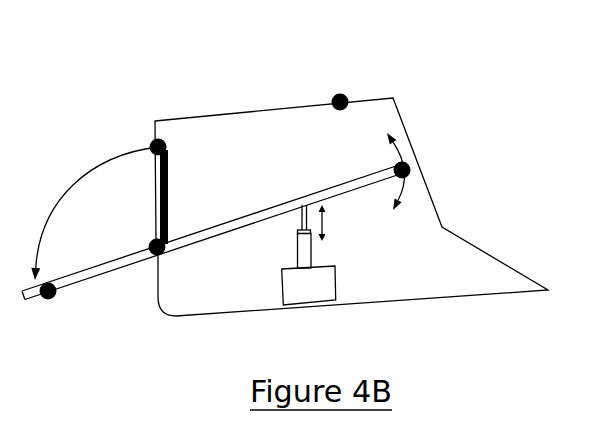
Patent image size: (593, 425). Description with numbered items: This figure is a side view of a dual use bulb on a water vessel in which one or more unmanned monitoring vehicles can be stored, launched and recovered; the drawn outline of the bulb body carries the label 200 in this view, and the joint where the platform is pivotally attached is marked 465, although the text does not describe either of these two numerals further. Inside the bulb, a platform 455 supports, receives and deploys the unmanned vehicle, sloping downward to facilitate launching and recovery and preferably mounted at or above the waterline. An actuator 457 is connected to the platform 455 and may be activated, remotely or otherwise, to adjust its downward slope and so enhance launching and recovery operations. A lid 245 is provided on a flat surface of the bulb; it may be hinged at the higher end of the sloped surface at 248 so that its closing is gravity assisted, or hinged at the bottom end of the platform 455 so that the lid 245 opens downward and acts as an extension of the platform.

The support platform 200 is at (255, 154).
The lid 245 is at (292, 102).
The hinge location at higher end of sloped surface 248 is at (344, 96).
The platform 455 is at (192, 242).
The actuator 457 is at (325, 287).
The linkage joint 465 is at (152, 256).